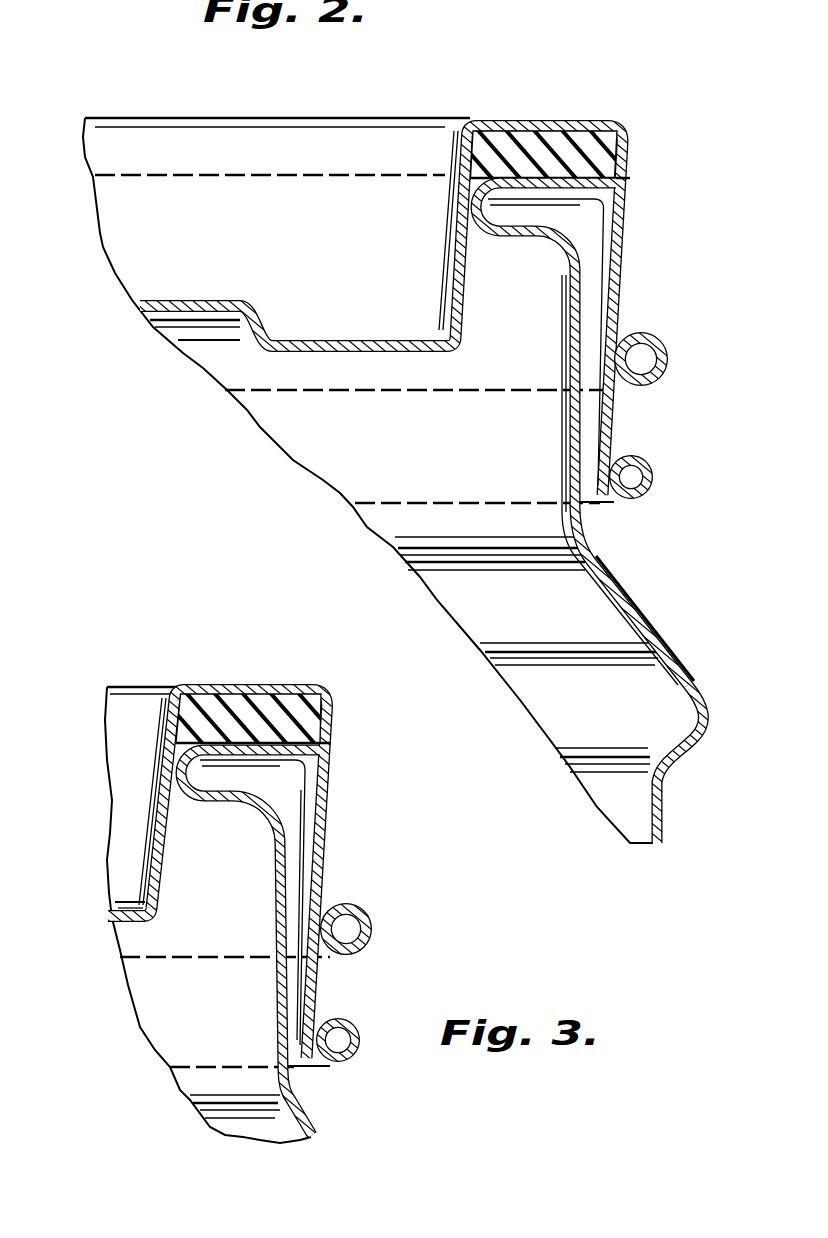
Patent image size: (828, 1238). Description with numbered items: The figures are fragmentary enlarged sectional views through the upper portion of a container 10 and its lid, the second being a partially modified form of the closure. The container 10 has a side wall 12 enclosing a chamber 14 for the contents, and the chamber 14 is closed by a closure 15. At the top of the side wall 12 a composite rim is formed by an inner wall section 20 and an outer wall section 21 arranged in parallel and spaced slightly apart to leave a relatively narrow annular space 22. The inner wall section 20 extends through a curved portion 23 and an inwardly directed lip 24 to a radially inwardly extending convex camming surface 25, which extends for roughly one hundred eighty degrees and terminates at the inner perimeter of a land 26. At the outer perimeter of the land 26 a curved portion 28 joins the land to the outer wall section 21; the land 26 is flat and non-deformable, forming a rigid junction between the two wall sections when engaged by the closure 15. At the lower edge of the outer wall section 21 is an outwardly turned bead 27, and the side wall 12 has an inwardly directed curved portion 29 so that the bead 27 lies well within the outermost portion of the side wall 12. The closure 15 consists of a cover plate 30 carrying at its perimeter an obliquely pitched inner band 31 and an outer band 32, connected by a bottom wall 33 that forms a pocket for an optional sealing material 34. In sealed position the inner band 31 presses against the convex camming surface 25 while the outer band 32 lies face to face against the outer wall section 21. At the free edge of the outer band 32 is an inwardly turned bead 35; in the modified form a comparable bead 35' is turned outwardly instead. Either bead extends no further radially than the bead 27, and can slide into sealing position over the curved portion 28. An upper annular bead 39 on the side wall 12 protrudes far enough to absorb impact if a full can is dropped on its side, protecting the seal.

In FIG. 2, the container 10 is at (230, 432).
In FIG. 3, the container 10 is at (185, 1107).
In FIG. 2, the side wall 12 is at (663, 806).
In FIG. 2, the chamber 14 is at (381, 445).
In FIG. 2, the closure 15 is at (160, 100).
In FIG. 3, the closure 15 is at (141, 676).
In FIG. 2, the inner wall section 20 is at (575, 410).
In FIG. 3, the inner wall section 20 is at (280, 979).
In FIG. 2, the outer wall section 21 is at (606, 420).
In FIG. 3, the outer wall section 21 is at (318, 843).
In FIG. 2, the annular space 22 is at (590, 456).
In FIG. 3, the annular space 22 is at (295, 1023).
In FIG. 2, the curved portion 23 is at (560, 252).
In FIG. 3, the curved portion 23 is at (266, 813).
In FIG. 2, the inwardly directed lip 24 is at (522, 238).
In FIG. 2, the convex camming surface 25 is at (482, 205).
In FIG. 3, the convex camming surface 25 is at (183, 771).
In FIG. 2, the land 26 is at (466, 140).
In FIG. 3, the land 26 is at (277, 733).
In FIG. 2, the outwardly turned bead 27 is at (648, 498).
In FIG. 3, the outwardly turned bead 27 is at (346, 1068).
In FIG. 2, the curved portion 28 is at (630, 179).
In FIG. 2, the inwardly directed curved portion 29 is at (640, 603).
In FIG. 2, the cover plate 30 is at (172, 300).
In FIG. 3, the cover plate 30 is at (125, 921).
In FIG. 2, the inner band 31 is at (455, 265).
In FIG. 3, the inner band 31 is at (172, 726).
In FIG. 2, the outer band 32 is at (618, 230).
In FIG. 3, the outer band 32 is at (323, 780).
In FIG. 2, the bottom wall 33 is at (560, 118).
In FIG. 3, the bottom wall 33 is at (287, 686).
In FIG. 2, the sealing material 34 is at (577, 155).
In FIG. 3, the sealing material 34 is at (285, 712).
In FIG. 2, the inwardly turned bead 35 is at (656, 324).
In FIG. 3, the outwardly turned bead 35' is at (359, 958).
In FIG. 2, the upper annular bead 39 is at (703, 700).